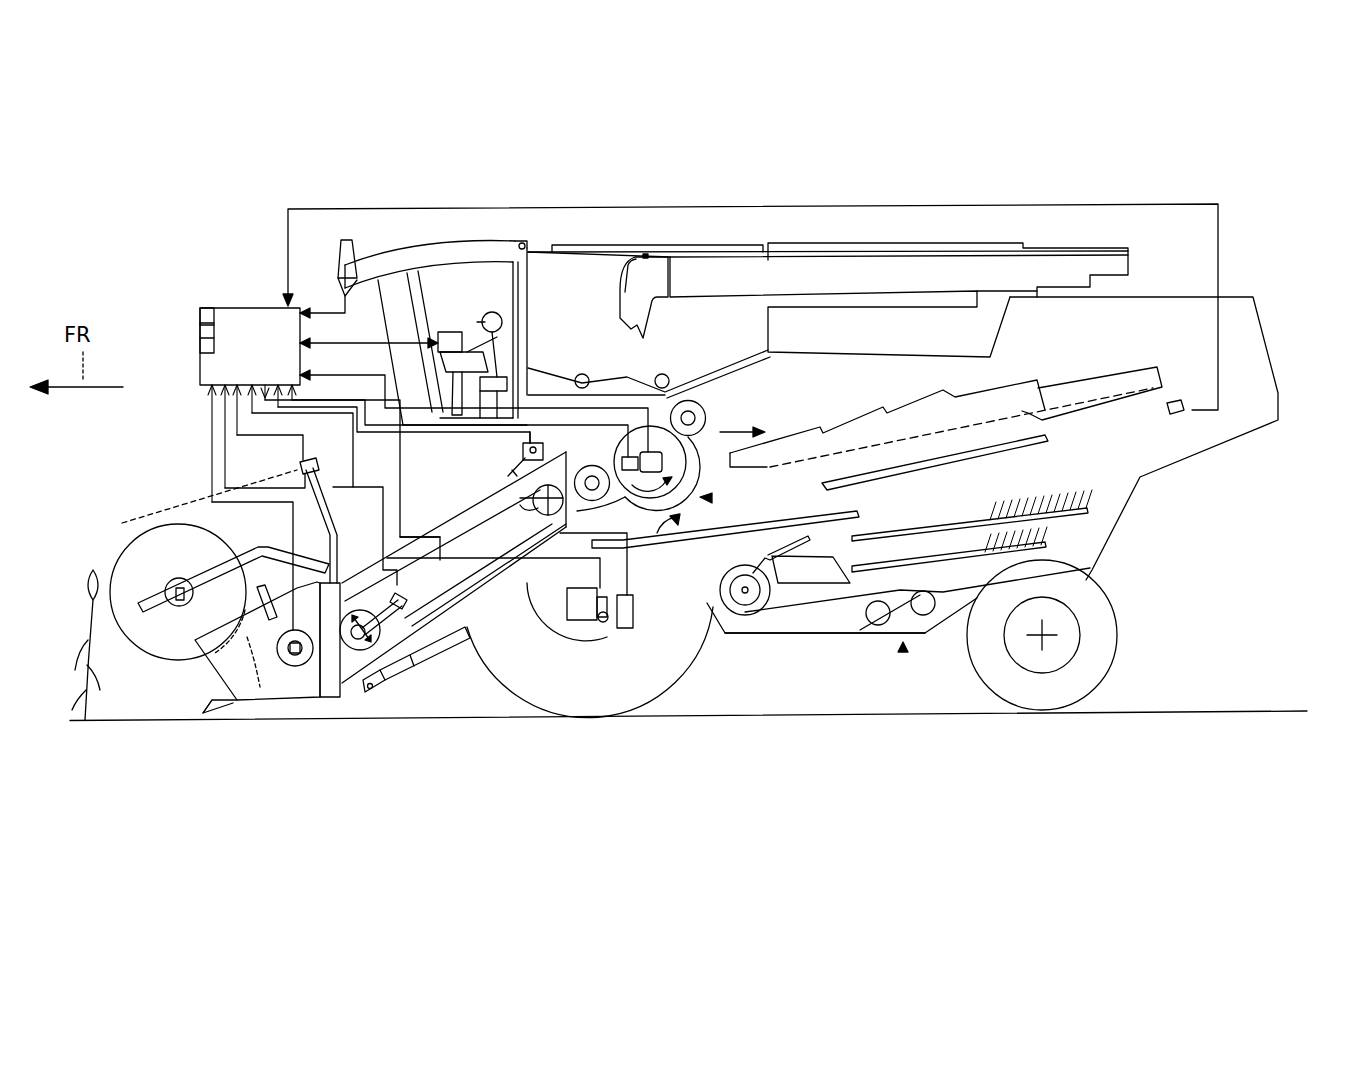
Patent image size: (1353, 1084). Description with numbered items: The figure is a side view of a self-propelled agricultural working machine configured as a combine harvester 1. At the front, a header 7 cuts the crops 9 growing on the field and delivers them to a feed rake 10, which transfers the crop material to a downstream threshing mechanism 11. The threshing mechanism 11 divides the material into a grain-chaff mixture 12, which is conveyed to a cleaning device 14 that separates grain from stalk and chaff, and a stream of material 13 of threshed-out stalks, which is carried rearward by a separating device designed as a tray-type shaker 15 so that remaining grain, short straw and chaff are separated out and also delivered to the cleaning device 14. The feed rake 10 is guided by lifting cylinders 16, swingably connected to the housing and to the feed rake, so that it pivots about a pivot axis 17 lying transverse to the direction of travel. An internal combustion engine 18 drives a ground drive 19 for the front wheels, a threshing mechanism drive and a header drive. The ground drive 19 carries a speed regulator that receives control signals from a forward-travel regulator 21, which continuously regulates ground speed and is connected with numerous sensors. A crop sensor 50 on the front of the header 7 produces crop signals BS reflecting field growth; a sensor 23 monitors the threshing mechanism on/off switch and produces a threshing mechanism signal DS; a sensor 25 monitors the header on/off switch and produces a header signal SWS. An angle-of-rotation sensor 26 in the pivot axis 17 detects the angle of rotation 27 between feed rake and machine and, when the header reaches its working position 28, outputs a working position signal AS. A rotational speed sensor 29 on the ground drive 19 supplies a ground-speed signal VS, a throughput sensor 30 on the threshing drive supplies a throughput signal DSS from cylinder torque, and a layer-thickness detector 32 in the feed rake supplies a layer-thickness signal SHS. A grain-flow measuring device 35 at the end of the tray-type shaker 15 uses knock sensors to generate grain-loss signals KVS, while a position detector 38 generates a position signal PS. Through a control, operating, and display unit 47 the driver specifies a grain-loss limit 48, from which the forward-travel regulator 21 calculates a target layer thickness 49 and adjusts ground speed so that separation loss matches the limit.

The combine harvester 1 is at (172, 197).
The header 7 is at (262, 690).
The crops 9 is at (90, 575).
The feed rake 10 is at (426, 700).
The threshing mechanism 11 is at (710, 498).
The grain-chaff mixture 12 is at (670, 528).
The stream of material 13 is at (738, 432).
The cleaning device 14 is at (903, 650).
The tray-type shaker 15 is at (1077, 395).
The lifting cylinders 16 is at (455, 650).
The pivot axis 17 is at (560, 600).
The internal combustion engine 18 is at (870, 250).
The ground drive 19 is at (630, 640).
The forward-travel regulator 21 is at (250, 346).
The sensor 23 is at (300, 700).
The sensor 25 is at (624, 455).
The angle-of-rotation sensor 26 is at (537, 443).
The angle of rotation 27 is at (525, 520).
The working position 28 is at (222, 720).
The rotational speed sensor 29 is at (585, 630).
The throughput sensor 30 is at (646, 450).
The layer-thickness detector 32 is at (380, 620).
The grain-flow measuring device 35 is at (1185, 420).
The position detector 38 is at (335, 255).
The control, operating, and display unit 47 is at (450, 326).
The grain-loss limit 48 is at (205, 305).
The target layer thickness 49 is at (200, 333).
The crop sensor 50 is at (298, 465).
The grain-loss signals KVS is at (1222, 236).
The position signal PS is at (322, 310).
The throughput signal DSS is at (354, 372).
The threshing mechanism signal DS is at (308, 404).
The crop signals BS is at (213, 414).
The header signal SWS is at (210, 463).
The layer-thickness signal SHS is at (380, 517).
The ground-speed signal VS is at (465, 545).
The working position signal AS is at (506, 470).